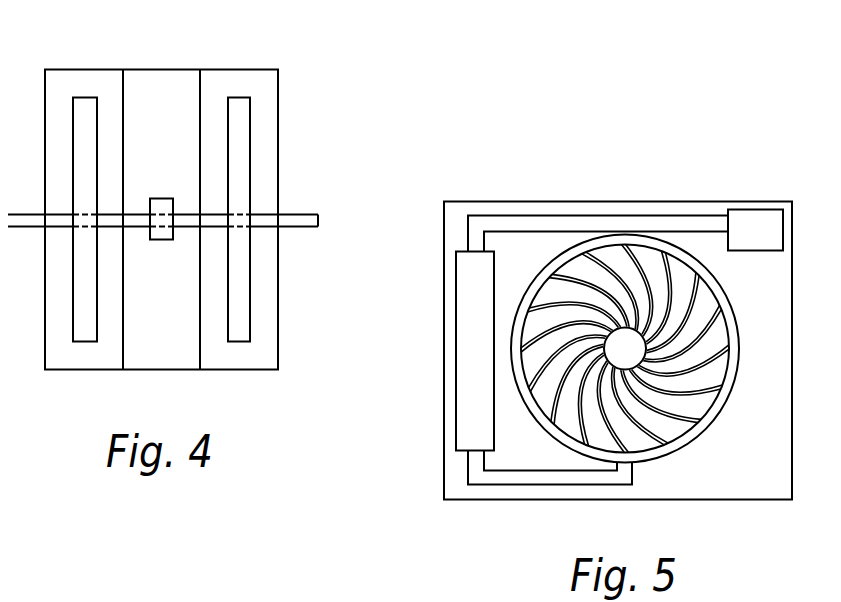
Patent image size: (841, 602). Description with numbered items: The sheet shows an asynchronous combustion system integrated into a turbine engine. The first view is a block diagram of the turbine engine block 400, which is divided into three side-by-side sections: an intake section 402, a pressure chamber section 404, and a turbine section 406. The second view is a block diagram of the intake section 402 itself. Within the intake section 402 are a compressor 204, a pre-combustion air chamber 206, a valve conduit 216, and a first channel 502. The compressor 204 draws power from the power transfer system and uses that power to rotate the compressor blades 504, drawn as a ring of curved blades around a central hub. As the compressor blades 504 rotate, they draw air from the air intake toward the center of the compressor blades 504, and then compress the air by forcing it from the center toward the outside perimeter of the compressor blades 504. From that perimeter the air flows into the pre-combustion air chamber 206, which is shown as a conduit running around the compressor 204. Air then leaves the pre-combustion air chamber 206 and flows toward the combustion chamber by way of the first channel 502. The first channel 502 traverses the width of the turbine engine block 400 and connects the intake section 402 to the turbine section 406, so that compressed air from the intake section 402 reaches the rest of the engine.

In FIG. 4, the turbine engine block 400 is at (317, 142).
In FIG. 4, the intake section 402 is at (84, 71).
In FIG. 5, the intake section 402 is at (628, 158).
In FIG. 4, the pressure chamber section 404 is at (161, 71).
In FIG. 4, the turbine section 406 is at (238, 71).
In FIG. 5, the compressor 204 is at (590, 265).
In FIG. 5, the pre-combustion air chamber 206 is at (457, 382).
In FIG. 5, the valve conduit 216 is at (484, 216).
In FIG. 5, the first channel 502 is at (752, 211).
In FIG. 5, the compressor blades 504 is at (667, 450).